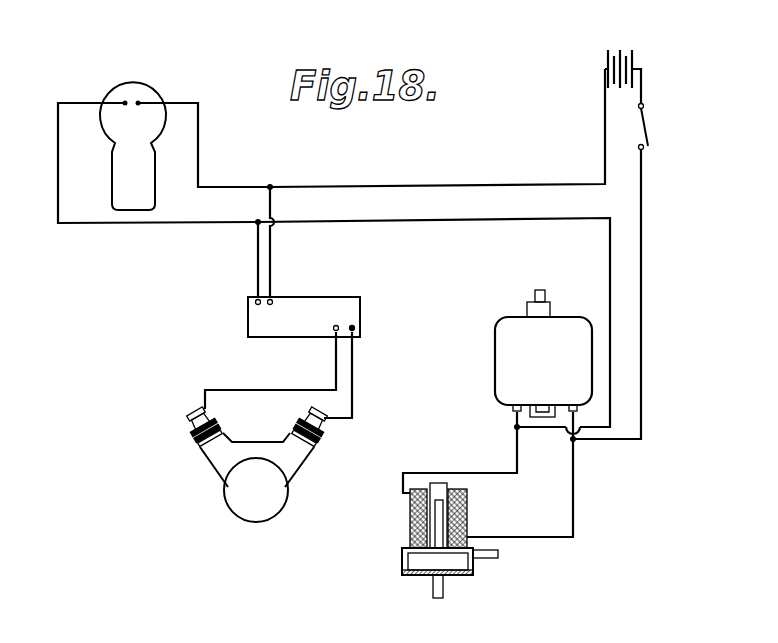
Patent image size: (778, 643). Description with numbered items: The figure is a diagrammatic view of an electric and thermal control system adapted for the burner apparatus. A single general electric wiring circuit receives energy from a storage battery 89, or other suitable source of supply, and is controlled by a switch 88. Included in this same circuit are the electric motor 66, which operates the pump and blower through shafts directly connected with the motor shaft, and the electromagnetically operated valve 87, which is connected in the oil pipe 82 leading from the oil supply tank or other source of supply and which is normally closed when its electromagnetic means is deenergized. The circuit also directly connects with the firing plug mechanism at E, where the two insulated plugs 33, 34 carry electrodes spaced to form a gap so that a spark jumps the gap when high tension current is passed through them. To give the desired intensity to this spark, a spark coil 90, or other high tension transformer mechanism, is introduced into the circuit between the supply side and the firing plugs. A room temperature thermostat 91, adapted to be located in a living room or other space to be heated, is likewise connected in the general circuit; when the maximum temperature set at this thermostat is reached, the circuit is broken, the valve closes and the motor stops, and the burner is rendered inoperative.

The room temperature thermostat 91 is at (150, 117).
The storage battery 89 is at (628, 63).
The switch 88 is at (653, 127).
The spark coil 90 is at (300, 308).
The insulated plug 33 is at (195, 425).
The insulated plug 34 is at (315, 430).
The firing plug mechanism E is at (243, 477).
The electric motor 66 is at (515, 338).
The electromagnetically operated valve 87 is at (468, 512).
The oil pipe 82 is at (492, 557).